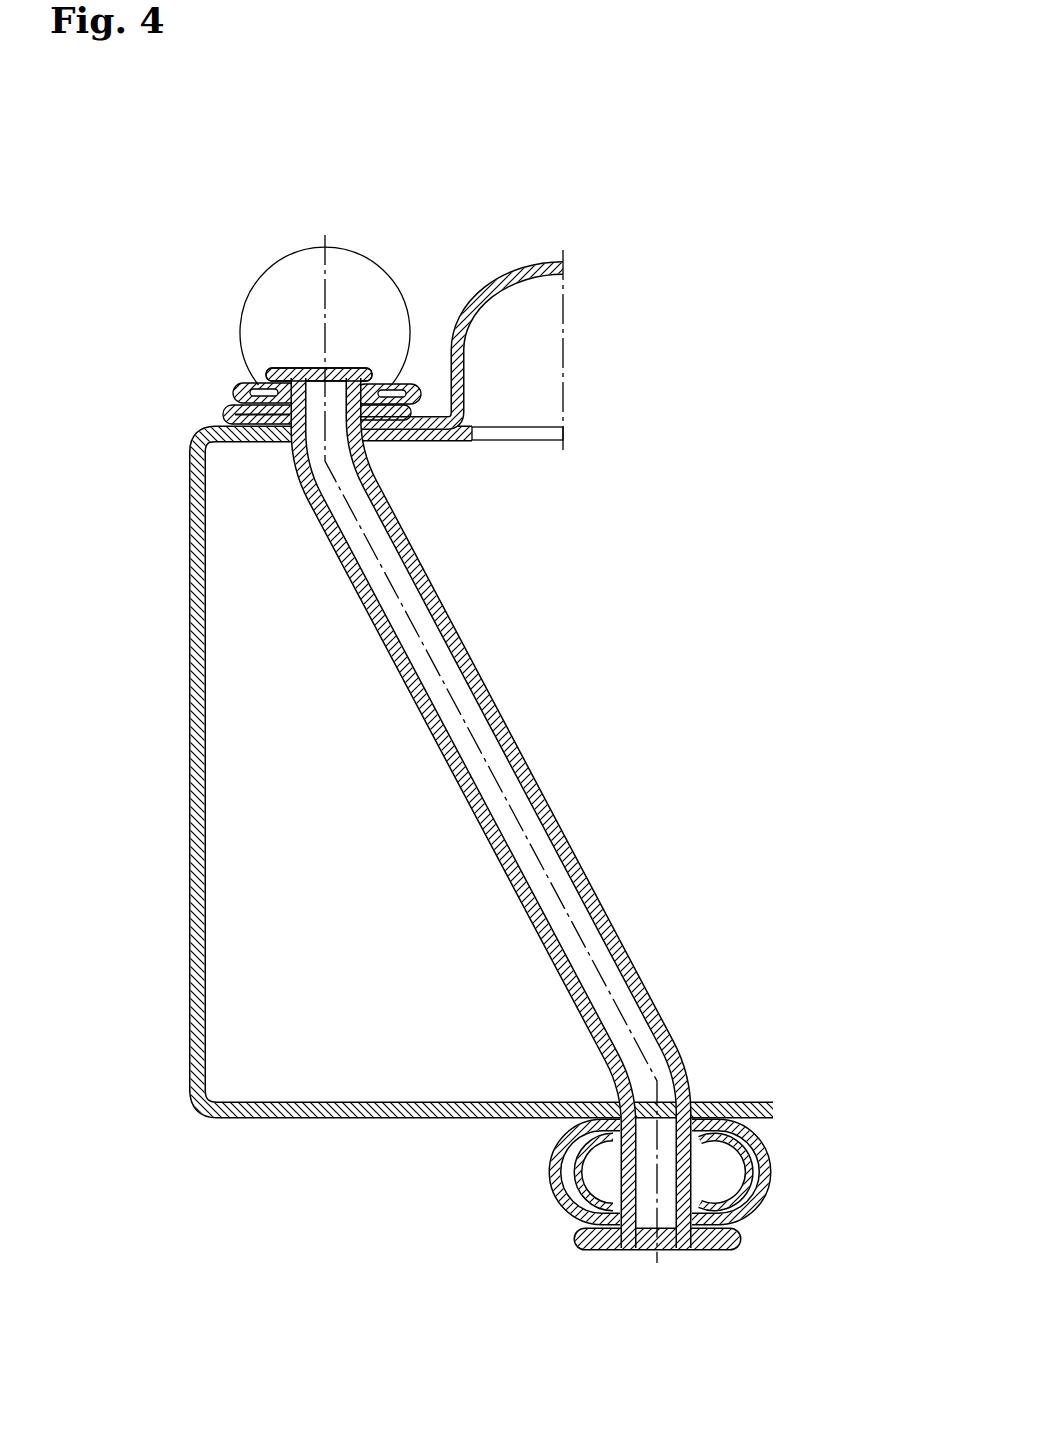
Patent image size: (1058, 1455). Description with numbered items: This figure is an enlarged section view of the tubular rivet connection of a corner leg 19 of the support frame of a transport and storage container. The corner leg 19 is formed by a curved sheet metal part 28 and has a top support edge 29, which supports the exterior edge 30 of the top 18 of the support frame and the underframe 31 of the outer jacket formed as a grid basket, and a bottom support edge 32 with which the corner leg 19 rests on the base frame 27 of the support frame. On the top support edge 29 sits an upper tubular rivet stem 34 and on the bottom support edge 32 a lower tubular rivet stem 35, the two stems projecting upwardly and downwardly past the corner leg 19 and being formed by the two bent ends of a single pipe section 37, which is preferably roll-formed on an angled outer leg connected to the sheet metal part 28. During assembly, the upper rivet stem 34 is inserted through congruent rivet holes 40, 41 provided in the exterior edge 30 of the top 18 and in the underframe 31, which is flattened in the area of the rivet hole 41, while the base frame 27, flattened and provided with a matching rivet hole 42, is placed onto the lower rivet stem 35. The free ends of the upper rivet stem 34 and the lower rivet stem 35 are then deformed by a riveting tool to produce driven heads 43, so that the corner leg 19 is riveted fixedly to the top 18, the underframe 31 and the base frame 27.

The top of the support frame 18 is at (555, 262).
The corner leg 19 is at (414, 902).
The base frame 27 is at (765, 1197).
The sheet metal part 28 is at (190, 722).
The top support edge 29 is at (443, 433).
The exterior edge of the top 30 is at (227, 408).
The underframe of the grid basket 31 is at (353, 250).
The bottom support edge 32 is at (392, 1117).
The upper tubular rivet stem 34 is at (318, 367).
The lower tubular rivet stem 35 is at (677, 1183).
The pipe section 37 is at (470, 805).
The rivet hole 40 is at (288, 438).
The rivet hole 41 is at (298, 500).
The rivet hole 42 is at (613, 1197).
The driven head 43 is at (285, 380).